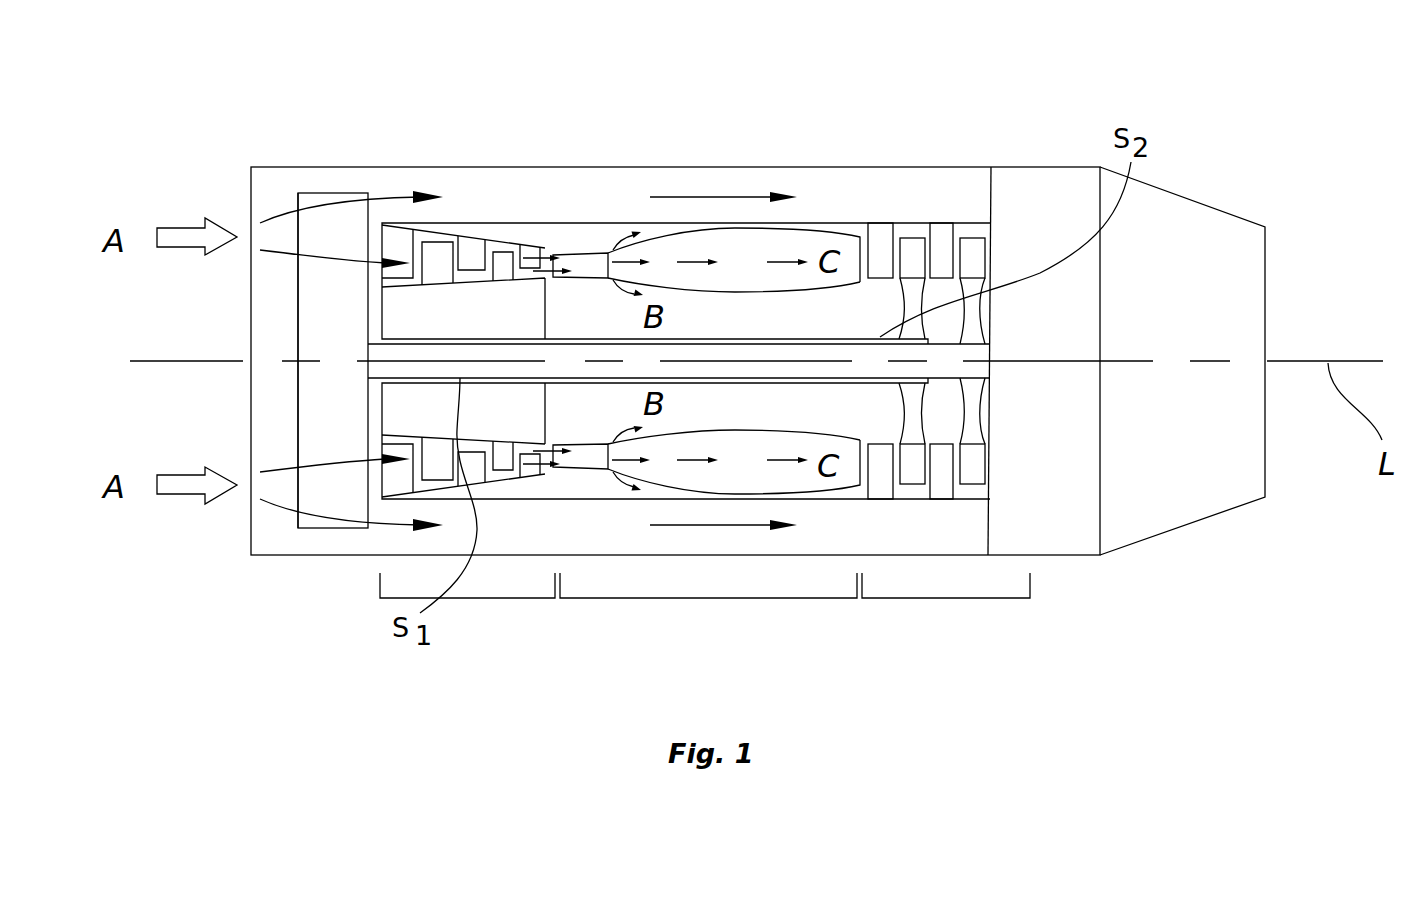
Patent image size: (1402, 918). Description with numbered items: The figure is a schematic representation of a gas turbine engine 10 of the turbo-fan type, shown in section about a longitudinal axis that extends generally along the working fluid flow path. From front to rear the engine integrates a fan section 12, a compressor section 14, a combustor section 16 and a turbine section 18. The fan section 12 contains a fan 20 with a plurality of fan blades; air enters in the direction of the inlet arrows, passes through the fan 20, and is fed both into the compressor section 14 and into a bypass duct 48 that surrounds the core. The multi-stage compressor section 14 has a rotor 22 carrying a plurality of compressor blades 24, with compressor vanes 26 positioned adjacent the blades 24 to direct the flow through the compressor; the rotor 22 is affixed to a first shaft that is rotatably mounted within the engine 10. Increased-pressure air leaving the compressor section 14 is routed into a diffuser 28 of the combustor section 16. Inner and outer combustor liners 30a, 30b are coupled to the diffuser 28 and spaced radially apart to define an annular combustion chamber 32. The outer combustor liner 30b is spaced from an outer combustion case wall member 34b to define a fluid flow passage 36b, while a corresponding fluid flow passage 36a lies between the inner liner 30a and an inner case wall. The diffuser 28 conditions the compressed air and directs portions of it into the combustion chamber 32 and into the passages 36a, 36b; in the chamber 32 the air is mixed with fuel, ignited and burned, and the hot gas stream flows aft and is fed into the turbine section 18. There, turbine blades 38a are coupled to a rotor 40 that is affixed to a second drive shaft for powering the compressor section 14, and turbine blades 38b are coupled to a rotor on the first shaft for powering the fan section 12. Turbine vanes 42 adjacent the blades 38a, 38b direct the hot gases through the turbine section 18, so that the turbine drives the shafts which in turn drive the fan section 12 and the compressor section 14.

The gas turbine engine 10 is at (948, 93).
The fan section 12 is at (322, 535).
The compressor section 14 is at (467, 605).
The combustor section 16 is at (580, 603).
The turbine section 18 is at (1003, 603).
The fan 20 is at (298, 402).
The rotor 22 is at (408, 323).
The compressor blades 24 is at (505, 257).
The compressor vanes 26 is at (477, 248).
The diffuser 28 is at (583, 262).
The inner combustor liner 30a is at (817, 288).
The outer combustor liner 30b is at (683, 233).
The combustion chamber 32 is at (752, 277).
The outer combustion case wall member 34b is at (752, 232).
The fluid flow passage 36a is at (778, 327).
The fluid flow passage 36b is at (657, 233).
The turbine blades 38a is at (909, 473).
The turbine blades 38b is at (978, 475).
The turbine rotor shaft 40 is at (913, 417).
The turbine vanes 42 is at (940, 230).
The bypass duct 48 is at (543, 207).